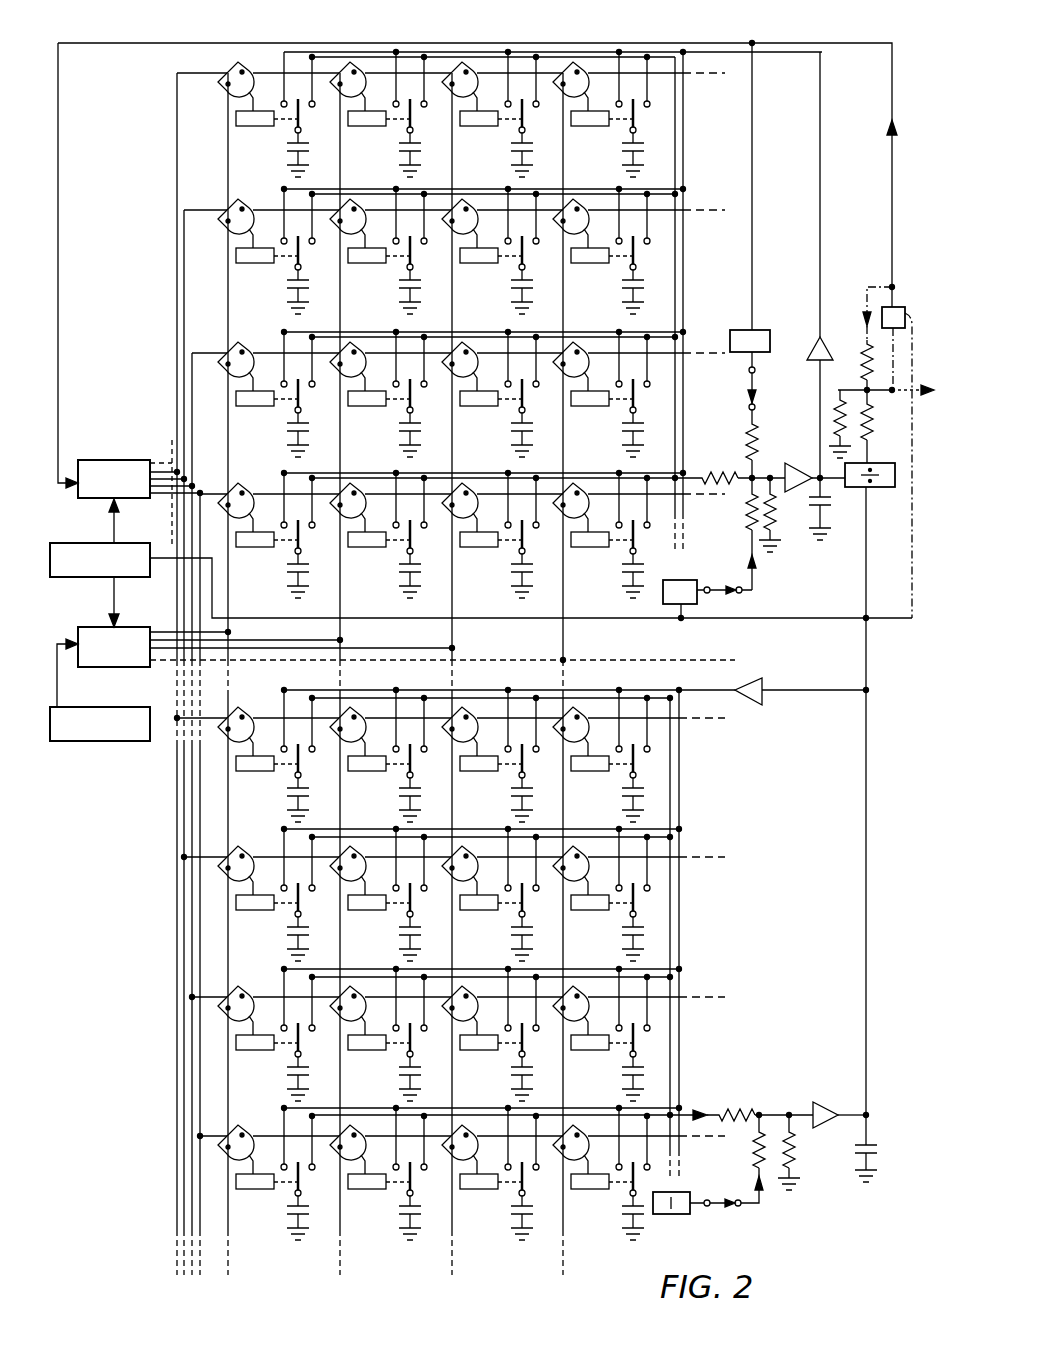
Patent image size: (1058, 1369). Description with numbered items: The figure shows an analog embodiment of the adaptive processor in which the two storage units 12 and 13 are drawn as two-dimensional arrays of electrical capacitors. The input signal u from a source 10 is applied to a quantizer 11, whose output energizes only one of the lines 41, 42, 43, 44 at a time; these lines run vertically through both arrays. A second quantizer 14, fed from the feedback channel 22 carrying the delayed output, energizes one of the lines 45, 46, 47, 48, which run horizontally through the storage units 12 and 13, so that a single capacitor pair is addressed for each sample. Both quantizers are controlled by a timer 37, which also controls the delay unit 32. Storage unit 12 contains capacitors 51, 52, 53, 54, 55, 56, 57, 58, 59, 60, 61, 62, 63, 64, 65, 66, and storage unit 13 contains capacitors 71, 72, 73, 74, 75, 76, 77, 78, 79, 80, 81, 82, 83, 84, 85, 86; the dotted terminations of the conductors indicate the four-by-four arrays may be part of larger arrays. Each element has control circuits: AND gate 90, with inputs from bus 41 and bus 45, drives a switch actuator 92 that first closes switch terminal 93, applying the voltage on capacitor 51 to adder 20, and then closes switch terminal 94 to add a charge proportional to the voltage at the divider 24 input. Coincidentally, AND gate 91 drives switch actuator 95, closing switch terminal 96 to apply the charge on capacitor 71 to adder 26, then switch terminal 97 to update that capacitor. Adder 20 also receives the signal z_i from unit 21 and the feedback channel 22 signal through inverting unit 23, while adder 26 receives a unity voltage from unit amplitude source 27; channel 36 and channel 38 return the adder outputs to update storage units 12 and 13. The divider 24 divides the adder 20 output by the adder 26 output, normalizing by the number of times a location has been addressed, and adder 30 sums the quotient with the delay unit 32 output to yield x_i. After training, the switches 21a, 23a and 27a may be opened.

The source 10 is at (104, 707).
The quantizer 11 is at (94, 627).
The storage unit 12 is at (502, 32).
The storage unit 13 is at (514, 677).
The quantizer 14 is at (122, 460).
The adder 20 is at (722, 462).
The unit 21 is at (686, 580).
The switch 21a is at (740, 594).
The feedback channel 22 is at (871, 45).
The inverting unit 23 is at (735, 330).
The switch 23a is at (748, 386).
The divider 24 is at (895, 486).
The adder 26 is at (780, 1102).
The unit amplitude source 27 is at (684, 1214).
The switch 27a is at (737, 1207).
The adder 30 is at (857, 387).
The delay unit 32 is at (908, 314).
The feedback channel 36 is at (819, 286).
The timer 37 is at (150, 538).
The channel 38 is at (683, 1078).
The line 41 is at (167, 631).
The line 42 is at (168, 644).
The line 43 is at (278, 647).
The line 44 is at (270, 657).
The line 45 is at (213, 73).
The line 46 is at (218, 210).
The line 47 is at (224, 353).
The line 48 is at (226, 494).
The capacitor 51 is at (264, 114).
The capacitor 52 is at (398, 145).
The capacitor 53 is at (510, 145).
The capacitor 54 is at (621, 145).
The capacitor 55 is at (286, 282).
The capacitor 56 is at (398, 282).
The capacitor 57 is at (510, 282).
The capacitor 58 is at (621, 282).
The capacitor 59 is at (286, 425).
The capacitor 60 is at (398, 425).
The capacitor 61 is at (510, 425).
The capacitor 62 is at (621, 425).
The capacitor 63 is at (286, 566).
The capacitor 64 is at (398, 566).
The capacitor 65 is at (510, 566).
The capacitor 66 is at (621, 566).
The capacitor 71 is at (267, 755).
The capacitor 72 is at (398, 790).
The capacitor 73 is at (510, 790).
The capacitor 74 is at (621, 790).
The capacitor 75 is at (286, 929).
The capacitor 76 is at (398, 929).
The capacitor 77 is at (510, 929).
The capacitor 78 is at (621, 929).
The capacitor 79 is at (286, 1069).
The capacitor 80 is at (398, 1069).
The capacitor 81 is at (510, 1069).
The capacitor 82 is at (621, 1069).
The capacitor 83 is at (286, 1208).
The capacitor 84 is at (398, 1208).
The capacitor 85 is at (510, 1208).
The capacitor 86 is at (621, 1208).
The AND gate 90 is at (222, 87).
The AND gate 91 is at (224, 734).
The switch actuator 92 is at (267, 132).
The switch terminal 93 is at (322, 97).
The switch terminal 94 is at (271, 79).
The switch actuator 95 is at (267, 777).
The switch terminal 96 is at (317, 738).
The switch terminal 97 is at (269, 720).